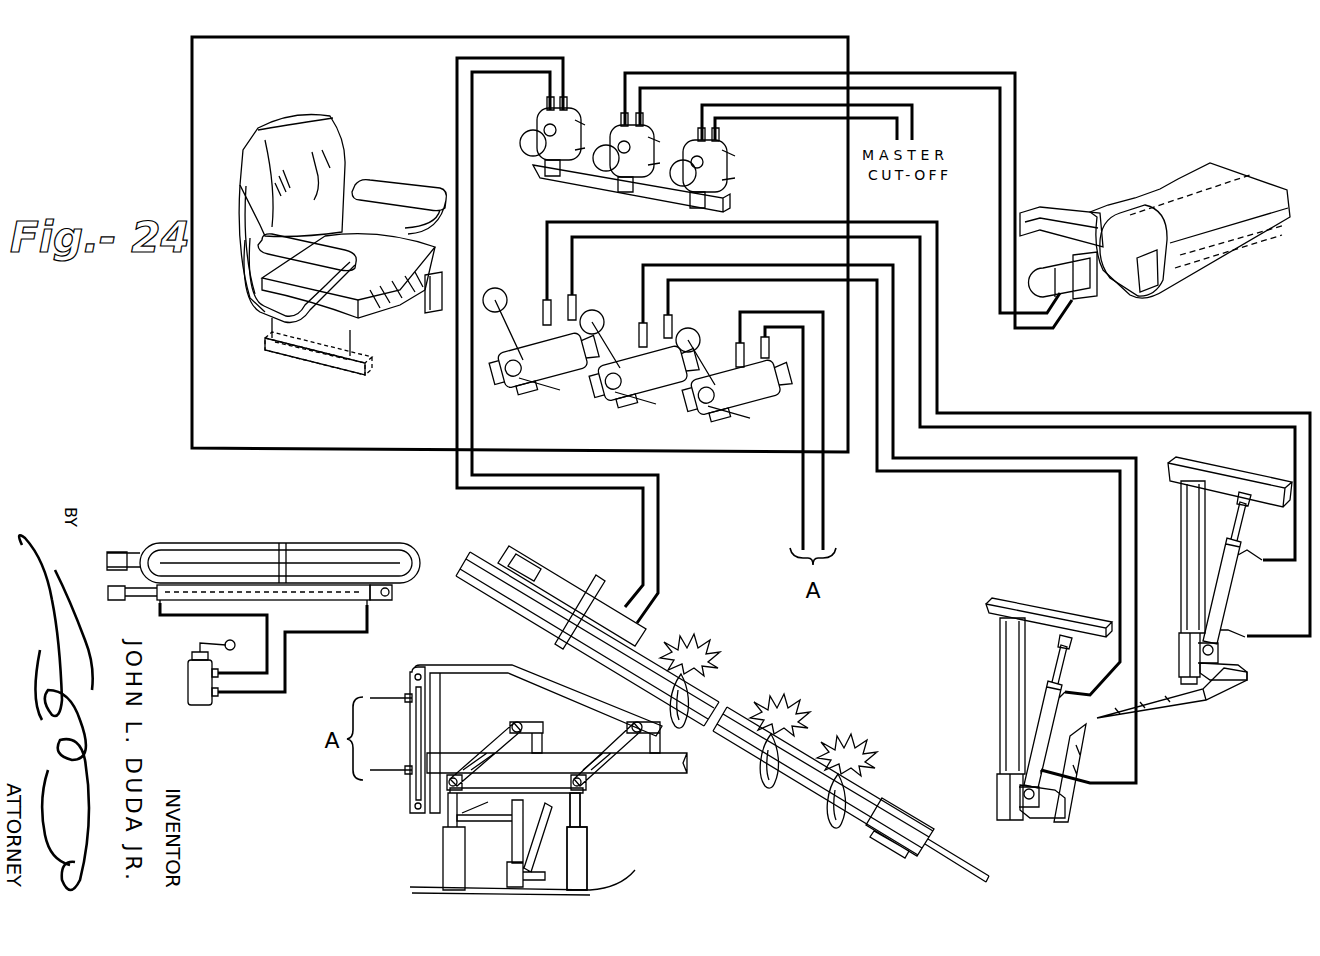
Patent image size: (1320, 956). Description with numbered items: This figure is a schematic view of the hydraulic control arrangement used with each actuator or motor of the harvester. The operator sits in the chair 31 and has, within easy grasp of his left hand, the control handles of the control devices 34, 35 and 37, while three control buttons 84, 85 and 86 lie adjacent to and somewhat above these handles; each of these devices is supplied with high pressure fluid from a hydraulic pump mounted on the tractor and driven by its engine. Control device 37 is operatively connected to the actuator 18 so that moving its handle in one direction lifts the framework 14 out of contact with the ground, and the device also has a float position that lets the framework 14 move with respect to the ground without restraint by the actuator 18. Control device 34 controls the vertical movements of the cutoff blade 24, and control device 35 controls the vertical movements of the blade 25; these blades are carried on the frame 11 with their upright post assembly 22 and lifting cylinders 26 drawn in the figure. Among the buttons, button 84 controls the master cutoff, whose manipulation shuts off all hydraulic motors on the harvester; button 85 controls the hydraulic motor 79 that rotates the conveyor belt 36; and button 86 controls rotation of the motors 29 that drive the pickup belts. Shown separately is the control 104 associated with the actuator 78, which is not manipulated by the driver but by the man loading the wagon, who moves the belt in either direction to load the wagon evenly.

The frame 11 is at (662, 772).
The framework 14 is at (578, 852).
The actuator 18 is at (413, 723).
The upright post assembly 22 is at (1182, 588).
The cutoff blade 24 is at (1217, 699).
The blade 25 is at (1080, 796).
The hydraulic cylinder 26 is at (1228, 592).
The motors 29 is at (583, 618).
The chair 31 is at (390, 313).
The control device 34 is at (558, 362).
The control device 35 is at (651, 385).
The conveyor belt 36 is at (1230, 180).
The control device 37 is at (748, 400).
The actuator 78 is at (338, 595).
The hydraulic motor 79 is at (1085, 300).
The control button 84 is at (688, 182).
The control button 85 is at (600, 166).
The control button 86 is at (527, 147).
The control 104 is at (197, 707).